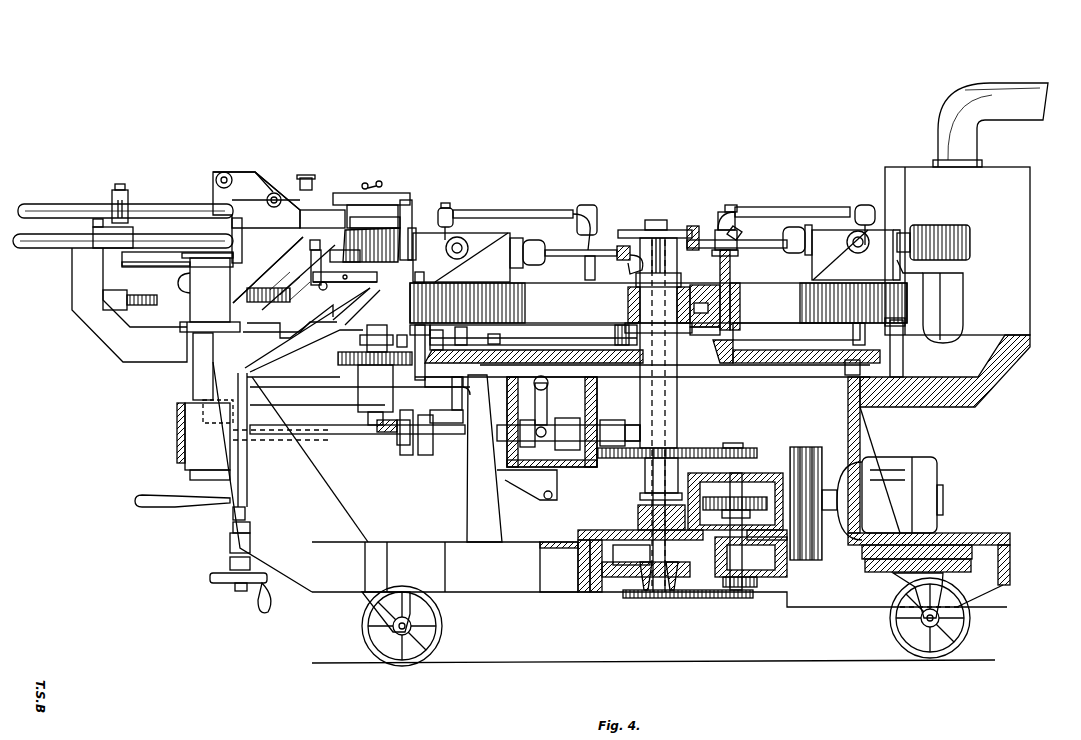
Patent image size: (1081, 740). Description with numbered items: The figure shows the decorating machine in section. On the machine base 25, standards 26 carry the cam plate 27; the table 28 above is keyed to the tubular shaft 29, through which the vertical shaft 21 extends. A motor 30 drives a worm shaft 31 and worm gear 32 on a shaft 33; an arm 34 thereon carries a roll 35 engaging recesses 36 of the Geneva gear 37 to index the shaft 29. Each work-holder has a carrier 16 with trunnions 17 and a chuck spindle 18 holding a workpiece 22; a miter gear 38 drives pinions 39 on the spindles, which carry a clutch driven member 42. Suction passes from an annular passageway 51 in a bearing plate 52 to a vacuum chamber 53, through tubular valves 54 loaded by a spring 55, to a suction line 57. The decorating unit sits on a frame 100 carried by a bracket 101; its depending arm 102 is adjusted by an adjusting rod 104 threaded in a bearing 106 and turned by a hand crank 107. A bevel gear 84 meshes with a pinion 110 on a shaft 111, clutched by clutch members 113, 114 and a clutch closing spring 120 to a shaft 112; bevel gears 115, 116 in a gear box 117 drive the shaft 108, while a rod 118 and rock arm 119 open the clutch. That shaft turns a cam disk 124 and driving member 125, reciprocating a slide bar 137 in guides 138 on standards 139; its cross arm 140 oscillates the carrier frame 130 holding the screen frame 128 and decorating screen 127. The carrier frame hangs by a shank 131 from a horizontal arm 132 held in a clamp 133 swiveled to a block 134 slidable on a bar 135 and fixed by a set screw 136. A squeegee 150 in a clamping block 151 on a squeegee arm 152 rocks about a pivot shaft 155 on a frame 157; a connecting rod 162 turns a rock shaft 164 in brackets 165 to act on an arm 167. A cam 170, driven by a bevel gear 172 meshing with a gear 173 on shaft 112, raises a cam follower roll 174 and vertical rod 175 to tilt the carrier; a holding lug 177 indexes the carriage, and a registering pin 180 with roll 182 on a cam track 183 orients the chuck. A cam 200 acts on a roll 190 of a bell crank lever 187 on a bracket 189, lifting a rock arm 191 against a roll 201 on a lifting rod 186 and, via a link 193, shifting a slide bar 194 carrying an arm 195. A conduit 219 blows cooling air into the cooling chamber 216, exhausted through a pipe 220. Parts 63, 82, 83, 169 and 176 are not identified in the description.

The carrier 16 is at (505, 235).
The trunnions 17 is at (462, 253).
The chuck spindle 18 is at (568, 262).
The vertical shaft 21 is at (668, 260).
The workpiece 22 is at (940, 224).
The machine base 25 is at (995, 533).
The standards 26 is at (848, 430).
The circular cam plate 27 is at (842, 327).
The circular table 28 is at (658, 303).
The vertical tubular shaft 29 is at (634, 300).
The electric motor 30 is at (895, 458).
The worm shaft 31 is at (760, 495).
The worm gear 32 is at (750, 478).
The shaft 33 is at (752, 588).
The arm 34 is at (704, 594).
The roll 35 is at (795, 520).
The radial recesses 36 is at (585, 558).
The Geneva gear 37 is at (625, 568).
The miter gear 38 is at (673, 228).
The pinions 39 is at (635, 258).
The clutch driven member 42 is at (458, 240).
The annular passageway 51 is at (702, 322).
The bearing plate 52 is at (741, 318).
The vacuum chamber 53 is at (706, 304).
The tubular valves 54 is at (741, 299).
The coil compression spring 55 is at (730, 270).
The suction line 57 is at (550, 211).
The wedge 63 is at (735, 340).
The gear 82 is at (750, 443).
The gear 83 is at (626, 458).
The bevel gear 84 is at (680, 444).
The stationary frame 100 is at (120, 343).
The bracket 101 is at (320, 496).
The depending arm 102 is at (246, 365).
The adjusting rod 104 is at (233, 528).
The bearing 106 is at (233, 514).
The hand crank 107 is at (258, 600).
The vertical shaft 108 is at (193, 390).
The pinion 110 is at (628, 424).
The shaft 111 is at (604, 415).
The shaft 112 is at (448, 435).
The clutch member 113 is at (565, 467).
The clutch member 114 is at (547, 398).
The bevel gear 115 is at (222, 430).
The bevel gear 116 is at (178, 416).
The gear box 117 is at (177, 440).
The hand-operated rod 118 is at (403, 482).
The rock arm 119 is at (540, 478).
The clutch closing spring 120 is at (525, 445).
The cam disk 124 is at (123, 300).
The driving member 125 is at (180, 290).
The decorating screen 127 is at (410, 228).
The screen frame 128 is at (418, 232).
The carrier frame 130 is at (312, 218).
The shank 131 is at (260, 280).
The horizontal arm 132 is at (170, 197).
The clamp 133 is at (128, 200).
The block 134 is at (133, 233).
The bar 135 is at (63, 248).
The set screw 136 is at (93, 222).
The slide bar 137 is at (210, 292).
The stationary guides 138 is at (190, 268).
The standards 139 is at (258, 298).
The cross arm 140 is at (130, 262).
The squeegee 150 is at (380, 218).
The clamping block 151 is at (360, 196).
The squeegee arm 152 is at (330, 196).
The pivot shaft 155 is at (280, 193).
The frame 157 is at (240, 230).
The connecting rod 162 is at (232, 200).
The rock shaft 164 is at (224, 172).
The brackets 165 is at (242, 178).
The arm 167 is at (270, 185).
The link 169 is at (306, 178).
The cam 170 is at (360, 352).
The bevel gear 172 is at (377, 426).
The gear 173 is at (395, 437).
The cam follower roll 174 is at (392, 323).
The vertical rod 175 is at (422, 270).
The link 176 is at (462, 380).
The holding lug 177 is at (438, 362).
The registering pin 180 is at (467, 334).
The cam follower roll 182 is at (500, 338).
The cam track 183 is at (858, 352).
The lifting rod 186 is at (284, 273).
The bell crank lever 187 is at (352, 305).
The bracket 189 is at (322, 335).
The roll 190 is at (300, 305).
The rock arm 191 is at (348, 252).
The link 193 is at (345, 279).
The slide bar 194 is at (360, 282).
The arm 195 is at (324, 247).
The cam 200 is at (155, 302).
The roll 201 is at (318, 280).
The cooling chamber 216 is at (1000, 167).
The conduit 219 is at (965, 290).
The pipe 220 is at (945, 130).